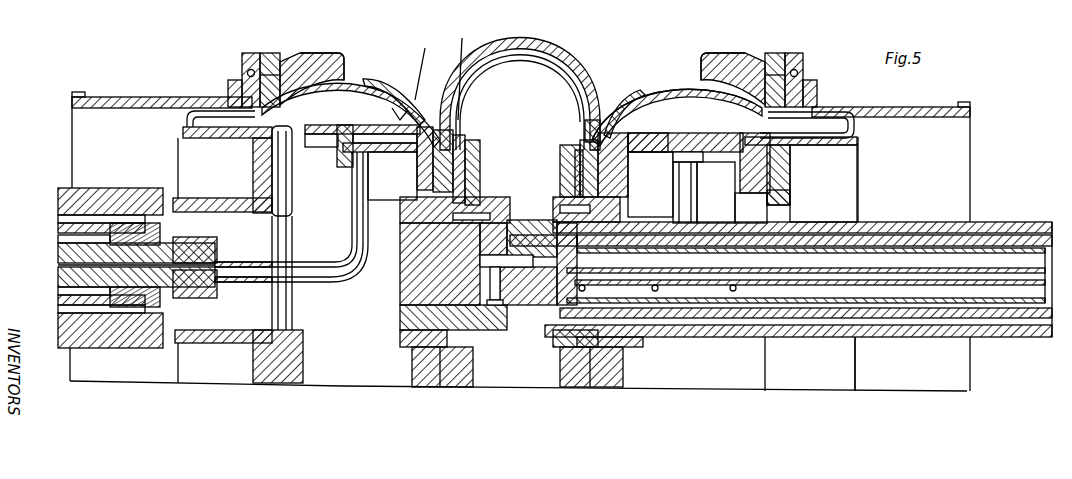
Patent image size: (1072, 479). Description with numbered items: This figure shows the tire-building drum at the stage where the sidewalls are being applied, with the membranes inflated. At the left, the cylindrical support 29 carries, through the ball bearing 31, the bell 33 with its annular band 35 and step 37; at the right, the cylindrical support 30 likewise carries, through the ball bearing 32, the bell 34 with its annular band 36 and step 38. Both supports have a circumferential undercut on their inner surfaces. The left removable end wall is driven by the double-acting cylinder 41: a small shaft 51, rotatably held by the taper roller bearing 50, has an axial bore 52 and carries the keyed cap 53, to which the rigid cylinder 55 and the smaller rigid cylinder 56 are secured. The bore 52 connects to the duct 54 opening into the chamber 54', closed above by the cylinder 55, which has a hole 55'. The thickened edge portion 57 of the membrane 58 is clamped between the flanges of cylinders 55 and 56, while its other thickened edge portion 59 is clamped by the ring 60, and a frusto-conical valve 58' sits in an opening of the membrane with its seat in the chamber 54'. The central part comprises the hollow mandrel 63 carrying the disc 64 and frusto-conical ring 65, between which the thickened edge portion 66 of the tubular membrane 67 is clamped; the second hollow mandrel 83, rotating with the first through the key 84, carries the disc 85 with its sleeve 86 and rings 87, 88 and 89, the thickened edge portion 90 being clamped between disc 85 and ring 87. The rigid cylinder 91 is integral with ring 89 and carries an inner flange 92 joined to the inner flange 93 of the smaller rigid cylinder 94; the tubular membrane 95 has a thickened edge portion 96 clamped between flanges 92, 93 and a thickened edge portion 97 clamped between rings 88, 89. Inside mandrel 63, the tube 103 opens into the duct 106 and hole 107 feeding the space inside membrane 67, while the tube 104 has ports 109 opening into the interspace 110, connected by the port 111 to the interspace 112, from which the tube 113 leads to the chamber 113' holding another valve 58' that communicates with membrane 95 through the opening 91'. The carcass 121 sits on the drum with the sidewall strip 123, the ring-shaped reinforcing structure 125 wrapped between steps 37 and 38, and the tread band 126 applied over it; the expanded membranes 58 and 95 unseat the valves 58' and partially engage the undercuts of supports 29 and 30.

The cylindrical support 29 is at (117, 97).
The cylindrical support 30 is at (941, 107).
The ball bearing 31 is at (240, 68).
The ball bearing 32 is at (802, 70).
The bell 33 is at (268, 52).
The bell 34 is at (776, 56).
The annular band 35 is at (336, 52).
The annular band 36 is at (724, 55).
The step 37 is at (306, 55).
The step 38 is at (754, 60).
The double-acting cylinder 41 is at (96, 190).
The taper roller bearing 50 is at (128, 240).
The small shaft 51 is at (200, 246).
The axial bore 52 is at (70, 268).
The cap 53 is at (220, 343).
The duct 54 is at (291, 234).
The chamber 54' is at (362, 135).
The rigid cylinder 55 is at (362, 125).
The hole 55' is at (434, 130).
The rigid cylinder 56 is at (220, 140).
The thickened edge portion 57 is at (258, 160).
The membrane 58 is at (351, 95).
The valve 58' is at (562, 102).
The thickened edge portion 59 is at (440, 160).
The ring 60 is at (402, 205).
The hollow mandrel 63 is at (822, 318).
The disc 64 is at (478, 170).
The ring 65 is at (450, 140).
The thickened edge portion 66 is at (462, 152).
The tubular membrane 67 is at (528, 58).
The second hollow mandrel 83 is at (905, 337).
The key 84 is at (895, 240).
The disc 85 is at (578, 160).
The sleeve 86 is at (632, 196).
The ring 87 is at (570, 170).
The ring 88 is at (592, 140).
The ring 89 is at (620, 172).
The thickened edge portion 90 is at (588, 145).
The rigid cylinder 91 is at (685, 129).
The opening 91' is at (655, 130).
The inner flange 92 is at (775, 170).
The inner flange 93 is at (772, 190).
The rigid cylinder 94 is at (857, 140).
The tubular membrane 95 is at (692, 90).
The thickened edge portion 96 is at (770, 150).
The thickened edge portion 97 is at (626, 100).
The tube 103 is at (992, 255).
The tube 104 is at (1010, 300).
The duct 106 is at (500, 300).
The hole 107 is at (516, 235).
The ports 109 is at (732, 292).
The interspace 110 is at (712, 240).
The port 111 is at (745, 244).
The interspace 112 is at (820, 222).
The tube 113 is at (701, 192).
The chamber 113' is at (710, 135).
The carcass 121 is at (464, 70).
The sidewall strip 123 is at (416, 76).
The ring-shaped reinforcing structure 125 is at (548, 48).
The tread band 126 is at (512, 38).